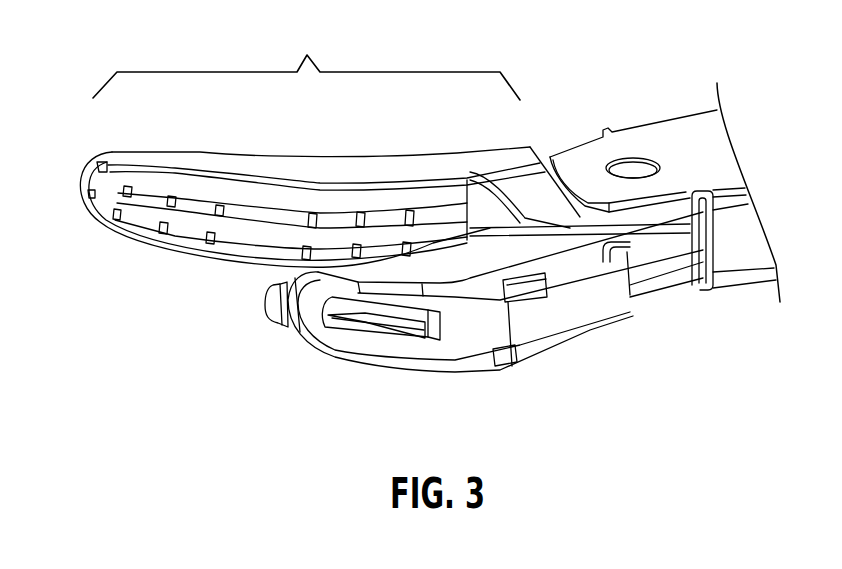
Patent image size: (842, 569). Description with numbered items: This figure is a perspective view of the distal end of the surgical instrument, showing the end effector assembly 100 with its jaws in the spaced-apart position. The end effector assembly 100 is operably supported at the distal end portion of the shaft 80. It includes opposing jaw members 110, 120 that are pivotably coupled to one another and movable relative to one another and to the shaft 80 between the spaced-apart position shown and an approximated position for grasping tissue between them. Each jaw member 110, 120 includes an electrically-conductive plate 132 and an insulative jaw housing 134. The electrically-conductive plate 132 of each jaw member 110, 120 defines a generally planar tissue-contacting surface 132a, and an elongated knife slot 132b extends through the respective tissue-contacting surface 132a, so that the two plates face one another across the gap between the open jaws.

The end effector assembly 100 is at (306, 62).
The shaft 80 is at (677, 130).
The jaw member 110 is at (138, 142).
The jaw member 120 is at (476, 381).
The electrically-conductive plate 132 is at (110, 208).
The tissue-contacting surface 132a is at (193, 233).
The knife slot 132b is at (343, 238).
The insulative jaw housing 134 is at (683, 208).